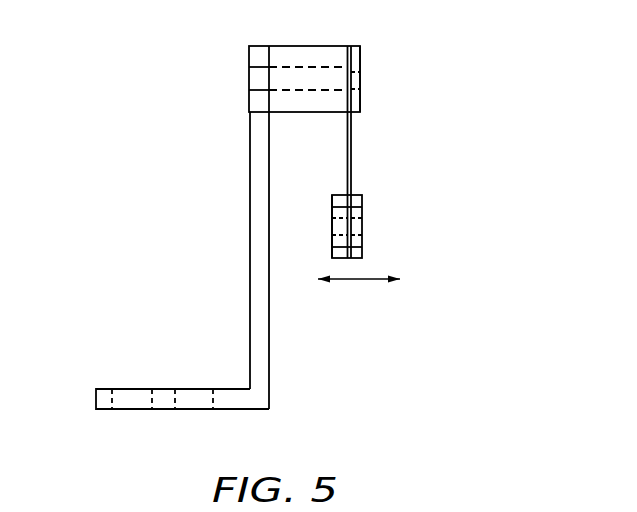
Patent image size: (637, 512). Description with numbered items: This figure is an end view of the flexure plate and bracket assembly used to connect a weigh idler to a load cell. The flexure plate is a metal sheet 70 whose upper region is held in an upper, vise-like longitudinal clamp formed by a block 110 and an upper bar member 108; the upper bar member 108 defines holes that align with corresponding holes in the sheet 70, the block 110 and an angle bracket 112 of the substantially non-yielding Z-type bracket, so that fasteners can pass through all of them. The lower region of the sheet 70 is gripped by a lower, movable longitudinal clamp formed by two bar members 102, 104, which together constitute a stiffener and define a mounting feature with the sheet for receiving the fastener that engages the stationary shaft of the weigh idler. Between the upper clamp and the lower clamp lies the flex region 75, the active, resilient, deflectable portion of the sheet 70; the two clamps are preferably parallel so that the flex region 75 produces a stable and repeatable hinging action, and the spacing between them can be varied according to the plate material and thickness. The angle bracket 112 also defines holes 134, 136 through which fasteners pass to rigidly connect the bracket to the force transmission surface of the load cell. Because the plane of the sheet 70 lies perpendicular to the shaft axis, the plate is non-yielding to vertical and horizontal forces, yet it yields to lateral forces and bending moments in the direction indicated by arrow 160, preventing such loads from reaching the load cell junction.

The block 110 is at (279, 46).
The upper bar member 108 is at (360, 58).
The metal sheet 70 is at (351, 140).
The flex region 75 is at (374, 165).
The bar member 104 is at (333, 223).
The bar member 102 is at (362, 209).
The arrow 160 is at (362, 280).
The angle bracket 112 is at (250, 173).
The hole 134 is at (128, 396).
The hole 136 is at (200, 398).